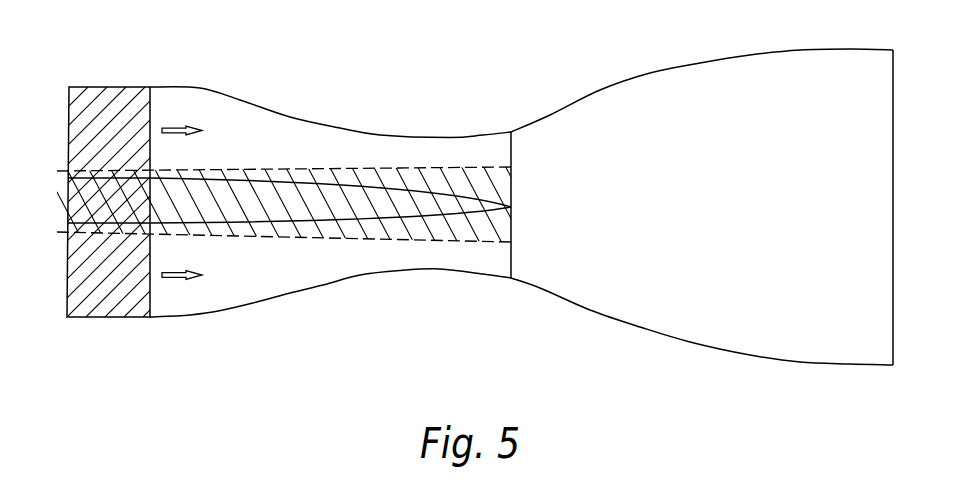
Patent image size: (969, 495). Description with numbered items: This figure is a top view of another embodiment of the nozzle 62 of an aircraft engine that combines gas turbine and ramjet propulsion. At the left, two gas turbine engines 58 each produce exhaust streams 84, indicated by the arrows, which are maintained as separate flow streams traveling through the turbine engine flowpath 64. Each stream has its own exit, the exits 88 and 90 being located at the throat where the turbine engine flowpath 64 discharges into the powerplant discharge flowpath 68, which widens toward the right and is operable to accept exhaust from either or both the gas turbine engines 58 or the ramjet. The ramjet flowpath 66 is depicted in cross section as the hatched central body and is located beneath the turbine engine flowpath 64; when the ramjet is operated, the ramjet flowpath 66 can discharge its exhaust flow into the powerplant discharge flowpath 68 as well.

The gas turbine engine 58 is at (130, 135).
The nozzle 62 is at (511, 51).
The turbine engine flowpath 64 is at (303, 142).
The ramjet flowpath 66 is at (327, 217).
The powerplant discharge flowpath 68 is at (665, 302).
The exhaust streams 84 is at (172, 126).
The exit 88 is at (513, 150).
The exit 90 is at (512, 257).